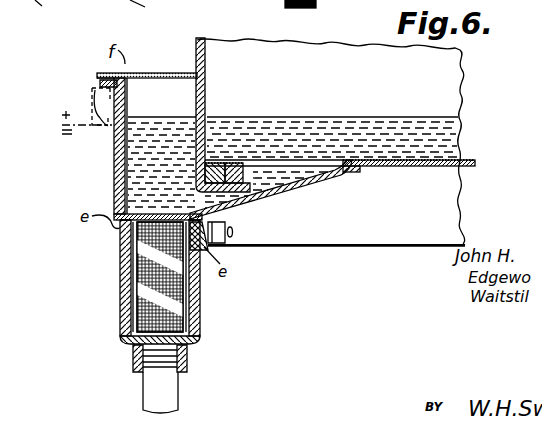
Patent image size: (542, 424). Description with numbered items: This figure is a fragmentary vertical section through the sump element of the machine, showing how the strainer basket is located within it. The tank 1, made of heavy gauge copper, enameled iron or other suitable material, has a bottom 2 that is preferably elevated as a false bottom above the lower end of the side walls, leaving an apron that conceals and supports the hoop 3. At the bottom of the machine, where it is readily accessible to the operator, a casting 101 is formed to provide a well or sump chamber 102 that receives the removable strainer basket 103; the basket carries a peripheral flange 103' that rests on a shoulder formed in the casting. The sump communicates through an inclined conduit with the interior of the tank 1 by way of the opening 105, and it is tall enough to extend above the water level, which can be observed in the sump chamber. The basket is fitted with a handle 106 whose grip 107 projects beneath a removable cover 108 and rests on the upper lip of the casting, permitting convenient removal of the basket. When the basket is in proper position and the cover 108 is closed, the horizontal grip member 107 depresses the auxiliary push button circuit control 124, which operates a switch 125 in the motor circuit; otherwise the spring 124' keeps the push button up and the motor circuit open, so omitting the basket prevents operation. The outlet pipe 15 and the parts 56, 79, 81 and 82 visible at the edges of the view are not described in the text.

The tank 1 is at (448, 80).
The bottom 2 is at (436, 166).
The hoop 3 is at (442, 236).
The outlet pipe 15 is at (170, 390).
The part 56 is at (324, 0).
The part 79 is at (305, 8).
The part 81 is at (268, 2).
The part 82 is at (296, 5).
The casting 101 is at (122, 230).
The sump chamber 102 is at (133, 308).
The strainer basket 103 is at (189, 277).
The peripheral flange 103' is at (135, 206).
The opening 105 is at (310, 162).
The handle 106 is at (128, 102).
The grip 107 is at (102, 78).
The removable cover 108 is at (171, 73).
The push button circuit control 124 is at (74, 80).
The spring 124' is at (73, 130).
The switch 125 is at (86, 104).